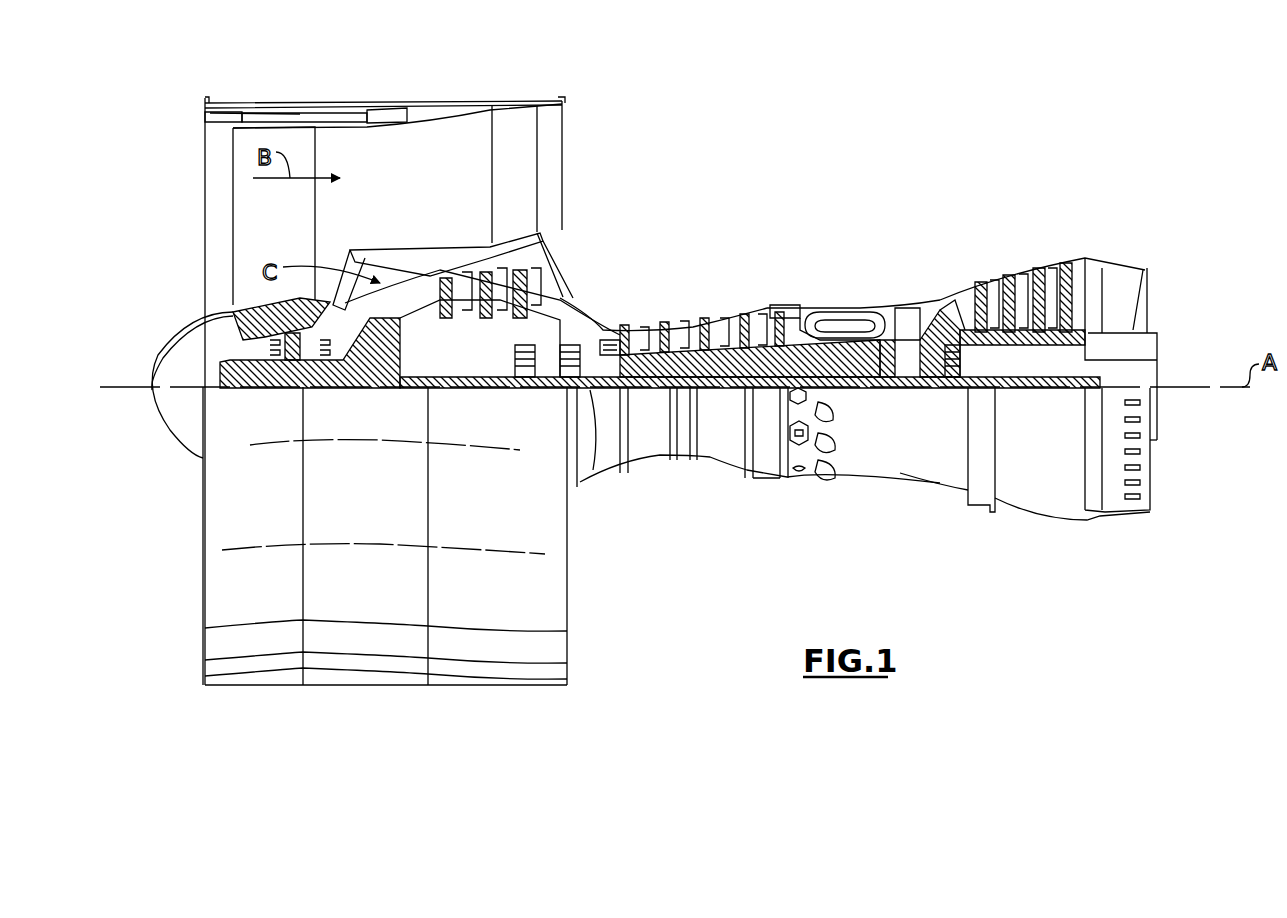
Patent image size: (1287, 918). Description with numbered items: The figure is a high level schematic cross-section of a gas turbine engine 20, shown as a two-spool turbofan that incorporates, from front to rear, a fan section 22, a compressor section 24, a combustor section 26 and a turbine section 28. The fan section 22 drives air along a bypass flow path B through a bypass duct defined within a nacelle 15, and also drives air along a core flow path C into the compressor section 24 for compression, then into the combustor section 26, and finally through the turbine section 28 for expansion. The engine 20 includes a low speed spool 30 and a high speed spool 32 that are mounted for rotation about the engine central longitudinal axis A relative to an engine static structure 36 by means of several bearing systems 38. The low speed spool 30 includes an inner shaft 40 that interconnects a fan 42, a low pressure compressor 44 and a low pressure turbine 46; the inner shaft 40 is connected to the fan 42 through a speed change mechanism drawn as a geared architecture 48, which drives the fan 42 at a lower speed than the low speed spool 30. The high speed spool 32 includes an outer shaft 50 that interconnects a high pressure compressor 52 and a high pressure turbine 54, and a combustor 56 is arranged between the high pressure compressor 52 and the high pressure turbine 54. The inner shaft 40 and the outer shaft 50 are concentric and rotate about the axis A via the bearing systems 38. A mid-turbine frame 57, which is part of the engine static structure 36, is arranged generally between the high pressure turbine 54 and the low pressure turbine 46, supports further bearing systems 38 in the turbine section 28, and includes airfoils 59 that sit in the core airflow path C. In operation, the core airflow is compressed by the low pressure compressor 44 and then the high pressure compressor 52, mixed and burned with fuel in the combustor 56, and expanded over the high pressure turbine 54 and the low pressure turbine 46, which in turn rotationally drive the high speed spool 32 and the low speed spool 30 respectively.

The nacelle 15 is at (386, 104).
The gas turbine engine 20 is at (858, 150).
The fan section 22 is at (314, 88).
The compressor section 24 is at (617, 288).
The combustor section 26 is at (840, 282).
The turbine section 28 is at (987, 247).
The low speed spool 30 is at (725, 395).
The high speed spool 32 is at (772, 305).
The engine static structure 36 is at (766, 480).
The bearing systems 38 is at (525, 372).
The inner shaft 40 is at (592, 465).
The fan 42 is at (291, 231).
The low pressure compressor 44 is at (500, 290).
The low pressure turbine 46 is at (1030, 275).
The geared architecture 48 is at (390, 367).
The outer shaft 50 is at (852, 380).
The high pressure compressor 52 is at (700, 350).
The high pressure turbine 54 is at (905, 308).
The combustor 56 is at (842, 328).
The mid-turbine frame 57 is at (950, 288).
The airfoils 59 is at (975, 350).